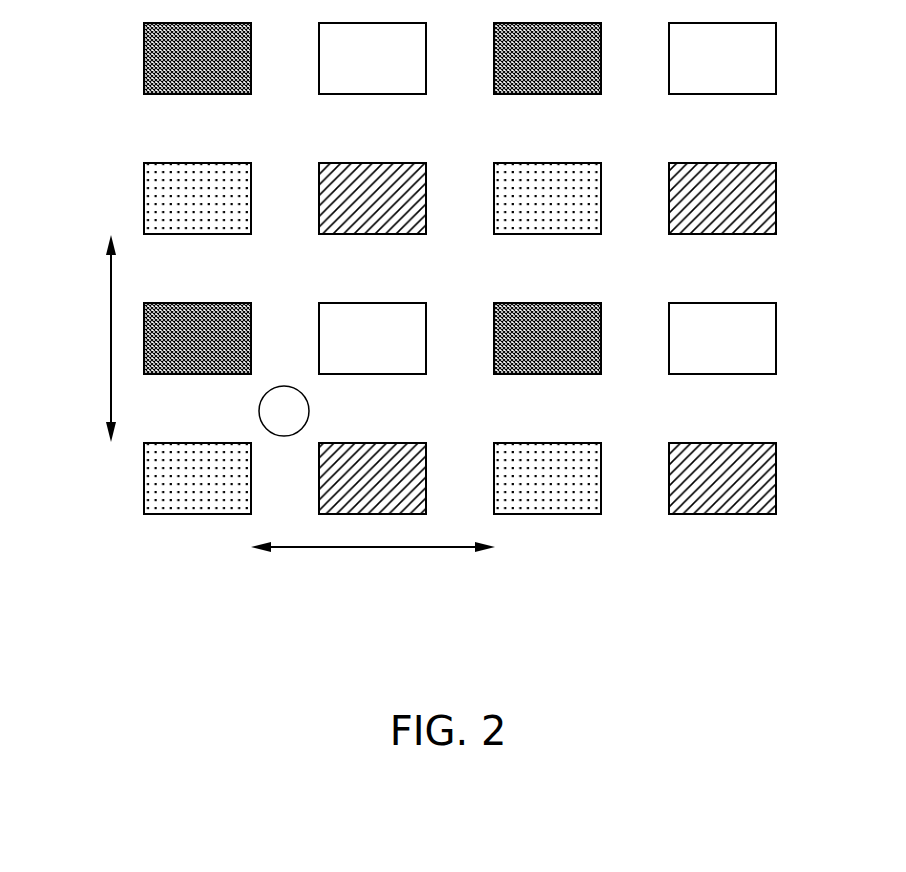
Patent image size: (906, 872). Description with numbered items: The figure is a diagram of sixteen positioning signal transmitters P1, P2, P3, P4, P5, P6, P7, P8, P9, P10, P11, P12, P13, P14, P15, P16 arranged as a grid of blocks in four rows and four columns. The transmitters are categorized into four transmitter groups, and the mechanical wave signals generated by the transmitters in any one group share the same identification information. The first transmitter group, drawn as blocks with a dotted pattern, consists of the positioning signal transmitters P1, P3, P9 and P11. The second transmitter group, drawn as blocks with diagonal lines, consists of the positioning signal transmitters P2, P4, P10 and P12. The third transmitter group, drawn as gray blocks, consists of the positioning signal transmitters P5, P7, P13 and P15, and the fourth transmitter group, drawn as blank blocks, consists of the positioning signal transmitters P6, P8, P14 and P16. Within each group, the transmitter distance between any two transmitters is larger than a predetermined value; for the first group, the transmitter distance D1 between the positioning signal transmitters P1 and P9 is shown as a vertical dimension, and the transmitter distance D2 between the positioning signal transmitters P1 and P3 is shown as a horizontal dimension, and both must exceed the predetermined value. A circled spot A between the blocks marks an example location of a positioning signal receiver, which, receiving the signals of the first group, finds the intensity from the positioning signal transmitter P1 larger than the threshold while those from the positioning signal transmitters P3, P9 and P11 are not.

The positioning signal transmitter P1 is at (197, 478).
The positioning signal transmitter P2 is at (372, 478).
The positioning signal transmitter P3 is at (547, 478).
The positioning signal transmitter P4 is at (722, 478).
The positioning signal transmitter P5 is at (197, 338).
The positioning signal transmitter P6 is at (372, 338).
The positioning signal transmitter P7 is at (547, 338).
The positioning signal transmitter P8 is at (722, 338).
The positioning signal transmitter P9 is at (197, 198).
The positioning signal transmitter P10 is at (372, 198).
The positioning signal transmitter P11 is at (547, 198).
The positioning signal transmitter P12 is at (722, 198).
The positioning signal transmitter P13 is at (197, 58).
The positioning signal transmitter P14 is at (372, 58).
The positioning signal transmitter P15 is at (547, 58).
The positioning signal transmitter P16 is at (722, 58).
The spot A is at (284, 411).
The transmitter distance D1 is at (80, 338).
The transmitter distance D2 is at (373, 567).